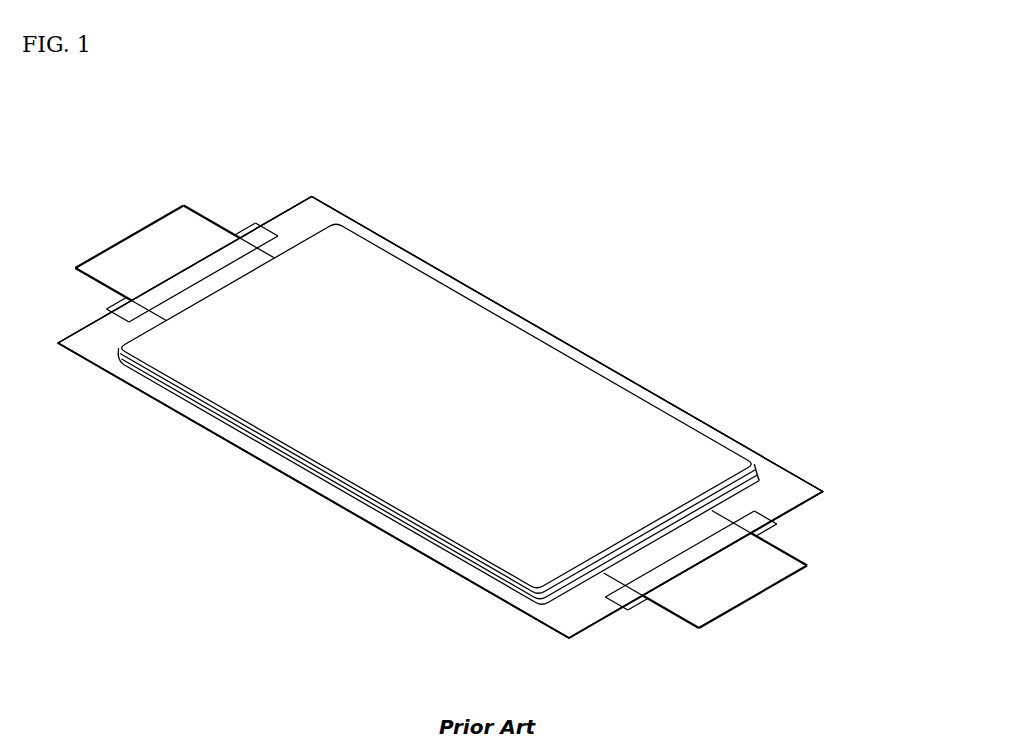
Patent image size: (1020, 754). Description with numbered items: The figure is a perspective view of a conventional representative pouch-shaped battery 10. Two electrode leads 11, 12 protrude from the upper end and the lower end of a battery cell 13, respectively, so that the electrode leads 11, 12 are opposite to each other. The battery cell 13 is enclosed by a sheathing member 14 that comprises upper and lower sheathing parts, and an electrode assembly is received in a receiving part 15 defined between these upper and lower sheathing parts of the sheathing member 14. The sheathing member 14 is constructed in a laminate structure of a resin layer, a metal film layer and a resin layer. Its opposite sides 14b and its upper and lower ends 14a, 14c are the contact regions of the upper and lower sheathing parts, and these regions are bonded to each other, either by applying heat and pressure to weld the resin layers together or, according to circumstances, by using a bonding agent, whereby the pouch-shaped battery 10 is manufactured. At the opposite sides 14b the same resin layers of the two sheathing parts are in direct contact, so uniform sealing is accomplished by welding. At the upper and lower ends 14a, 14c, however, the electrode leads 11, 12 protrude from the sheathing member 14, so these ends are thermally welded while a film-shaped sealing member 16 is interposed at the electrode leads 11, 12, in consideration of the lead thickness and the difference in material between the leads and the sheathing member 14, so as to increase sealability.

The pouch-shaped battery 10 is at (44, 100).
The electrode lead 11 is at (150, 242).
The electrode lead 12 is at (760, 595).
The battery cell 13 is at (541, 362).
The sheathing member 14 is at (810, 478).
The upper end 14a is at (312, 213).
The opposite sides 14b is at (430, 555).
The lower end 14c is at (588, 610).
The receiving part 15 is at (658, 398).
The film-shaped sealing member 16 is at (773, 530).